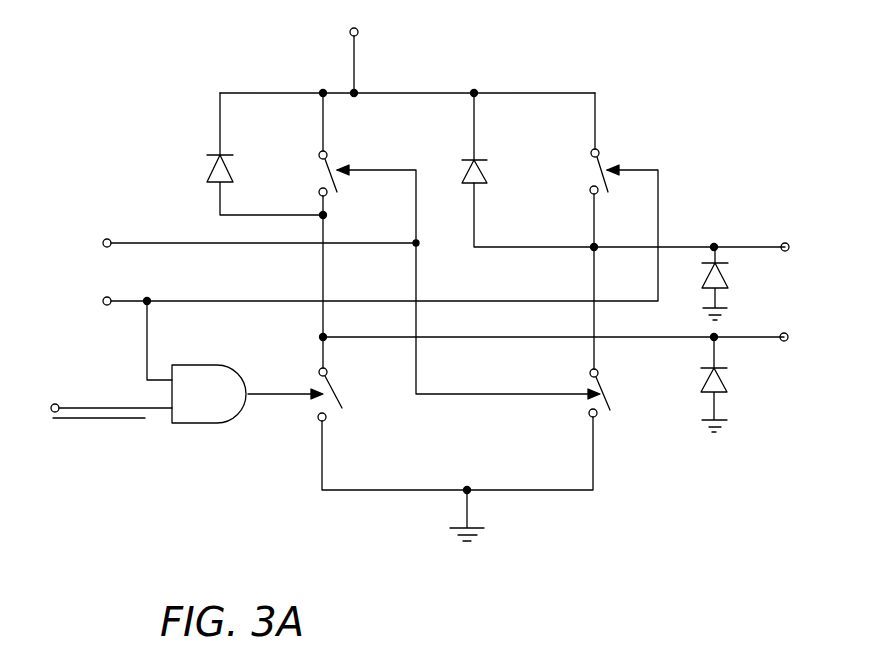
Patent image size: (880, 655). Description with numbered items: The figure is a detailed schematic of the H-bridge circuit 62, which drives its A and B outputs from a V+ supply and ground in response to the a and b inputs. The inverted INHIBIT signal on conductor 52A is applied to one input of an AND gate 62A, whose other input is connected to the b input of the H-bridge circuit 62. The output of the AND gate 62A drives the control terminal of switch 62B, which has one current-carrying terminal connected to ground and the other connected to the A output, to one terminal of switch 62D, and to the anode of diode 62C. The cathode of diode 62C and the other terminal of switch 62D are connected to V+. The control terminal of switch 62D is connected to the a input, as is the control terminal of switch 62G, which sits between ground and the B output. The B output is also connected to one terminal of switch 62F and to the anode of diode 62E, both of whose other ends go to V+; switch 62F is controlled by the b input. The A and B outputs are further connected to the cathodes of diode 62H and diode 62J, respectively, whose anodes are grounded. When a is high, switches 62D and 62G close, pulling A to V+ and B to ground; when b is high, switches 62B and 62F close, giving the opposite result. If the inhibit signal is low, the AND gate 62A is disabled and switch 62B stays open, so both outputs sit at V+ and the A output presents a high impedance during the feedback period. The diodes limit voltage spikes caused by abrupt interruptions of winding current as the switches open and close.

The H-bridge circuit 62 is at (243, 494).
The conductor 52A is at (57, 404).
The AND gate 62A is at (232, 418).
The switch 62B is at (335, 392).
The diode 62C is at (205, 180).
The switch 62D is at (333, 157).
The diode 62E is at (487, 175).
The switch 62F is at (603, 157).
The switch 62G is at (608, 398).
The diode 62H is at (727, 277).
The diode 62J is at (728, 383).